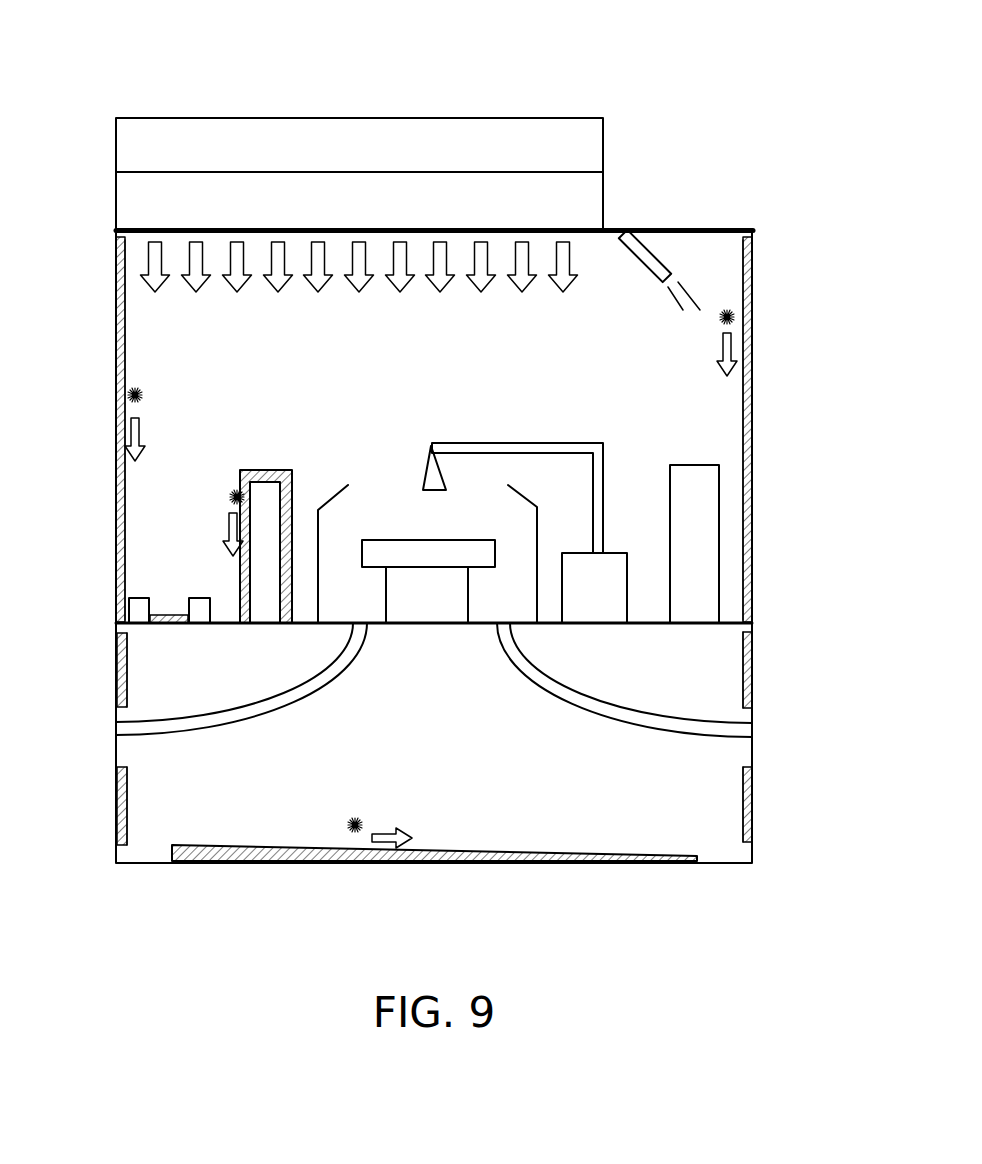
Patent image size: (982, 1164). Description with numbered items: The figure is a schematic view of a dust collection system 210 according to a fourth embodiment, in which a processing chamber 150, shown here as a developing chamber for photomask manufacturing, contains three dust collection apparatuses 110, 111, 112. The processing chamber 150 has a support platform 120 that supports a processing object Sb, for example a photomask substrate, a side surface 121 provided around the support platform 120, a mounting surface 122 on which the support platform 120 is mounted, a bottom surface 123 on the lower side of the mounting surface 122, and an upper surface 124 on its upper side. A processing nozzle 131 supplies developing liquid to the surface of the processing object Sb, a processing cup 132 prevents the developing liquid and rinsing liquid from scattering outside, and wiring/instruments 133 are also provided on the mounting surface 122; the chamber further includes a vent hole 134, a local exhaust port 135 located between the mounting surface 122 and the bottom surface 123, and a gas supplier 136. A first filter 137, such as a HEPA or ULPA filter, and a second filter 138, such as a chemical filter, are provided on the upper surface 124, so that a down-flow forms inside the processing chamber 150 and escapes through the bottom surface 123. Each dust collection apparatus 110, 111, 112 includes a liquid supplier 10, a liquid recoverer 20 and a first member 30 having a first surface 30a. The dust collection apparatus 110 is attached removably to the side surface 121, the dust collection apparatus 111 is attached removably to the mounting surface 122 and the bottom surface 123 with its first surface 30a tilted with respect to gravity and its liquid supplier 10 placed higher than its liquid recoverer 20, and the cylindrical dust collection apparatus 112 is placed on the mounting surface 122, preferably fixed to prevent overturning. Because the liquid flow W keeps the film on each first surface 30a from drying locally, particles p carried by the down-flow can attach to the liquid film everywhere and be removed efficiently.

The liquid supplier 10 is at (118, 240).
The liquid recoverer 20 is at (116, 618).
The first member 30 is at (116, 362).
The first surface 30a is at (126, 318).
The dust collection apparatus 110 is at (737, 404).
The dust collection apparatus 111 is at (158, 614).
The dust collection apparatus 112 is at (267, 459).
The support platform 120 is at (440, 600).
The side surface 121 is at (116, 500).
The mounting surface 122 is at (333, 627).
The bottom surface 123 is at (680, 860).
The upper surface 124 is at (742, 229).
The processing nozzle 131 is at (468, 442).
The processing cup 132 is at (528, 495).
The wiring/instruments 133 is at (705, 505).
The vent hole 134 is at (132, 596).
The local exhaust port 135 is at (352, 670).
The gas supplier 136 is at (632, 260).
The first filter 137 is at (515, 148).
The second filter 138 is at (578, 198).
The processing chamber 150 is at (703, 232).
The dust collection system 210 is at (781, 170).
The processing object Sb is at (412, 550).
The particles p is at (140, 390).
The water droplet movement W is at (128, 436).